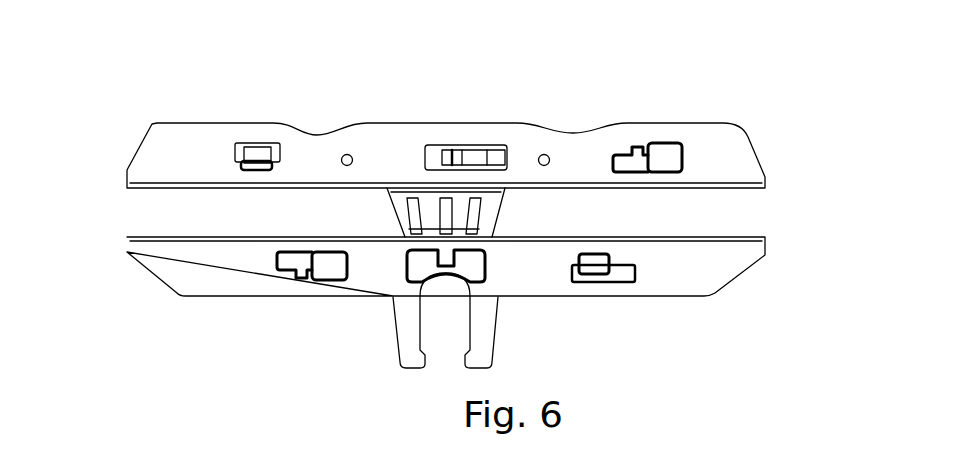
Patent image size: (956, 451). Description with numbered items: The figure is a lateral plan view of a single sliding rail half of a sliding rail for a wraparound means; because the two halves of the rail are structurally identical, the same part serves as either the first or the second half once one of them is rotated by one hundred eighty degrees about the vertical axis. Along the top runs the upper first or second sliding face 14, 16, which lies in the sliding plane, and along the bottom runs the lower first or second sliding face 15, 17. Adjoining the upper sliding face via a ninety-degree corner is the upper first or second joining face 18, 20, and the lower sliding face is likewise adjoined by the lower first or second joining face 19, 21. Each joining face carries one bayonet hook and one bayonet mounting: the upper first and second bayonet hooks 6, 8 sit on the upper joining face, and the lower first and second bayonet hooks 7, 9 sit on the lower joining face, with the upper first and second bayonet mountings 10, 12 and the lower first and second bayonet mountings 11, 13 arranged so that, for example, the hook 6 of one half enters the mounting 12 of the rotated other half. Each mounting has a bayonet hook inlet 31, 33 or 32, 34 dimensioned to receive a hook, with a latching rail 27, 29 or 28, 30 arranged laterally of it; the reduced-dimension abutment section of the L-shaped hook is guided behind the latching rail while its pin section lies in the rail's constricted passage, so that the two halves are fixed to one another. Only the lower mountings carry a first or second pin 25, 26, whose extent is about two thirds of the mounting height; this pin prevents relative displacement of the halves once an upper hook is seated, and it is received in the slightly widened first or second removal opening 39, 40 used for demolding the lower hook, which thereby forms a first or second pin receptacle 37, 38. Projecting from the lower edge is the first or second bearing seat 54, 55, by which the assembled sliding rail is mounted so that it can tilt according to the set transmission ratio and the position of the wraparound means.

The upper first bayonet hook 6 is at (240, 119).
The upper second bayonet hook 8 is at (258, 155).
The lower first bayonet hook 7 is at (572, 307).
The lower second bayonet hook 9 is at (593, 268).
The upper first bayonet mounting 10 is at (654, 96).
The upper second bayonet mounting 12 is at (654, 96).
The lower first bayonet mounting 11 is at (301, 247).
The lower second bayonet mounting 13 is at (301, 247).
The upper first sliding face 14 is at (480, 133).
The upper second sliding face 16 is at (480, 133).
The lower first sliding face 15 is at (457, 235).
The lower second sliding face 17 is at (457, 235).
The upper first joining face 18 is at (480, 133).
The upper second joining face 20 is at (742, 192).
The lower first joining face 19 is at (457, 235).
The lower second joining face 21 is at (744, 234).
The first pin 25 is at (301, 247).
The second pin 26 is at (301, 247).
The latching rail 27 is at (609, 118).
The latching rail 29 is at (634, 141).
The latching rail 28 is at (267, 309).
The latching rail 30 is at (289, 275).
The bayonet hook inlet 31 is at (691, 118).
The bayonet hook inlet 33 is at (669, 137).
The bayonet hook inlet 32 is at (346, 309).
The bayonet hook inlet 34 is at (346, 309).
The first pin receptacle 37 is at (628, 331).
The first removal opening 39 is at (628, 331).
The second pin receptacle 38 is at (628, 331).
The second removal opening 40 is at (617, 290).
The first bearing seat 54 is at (432, 350).
The second bearing seat 55 is at (455, 354).